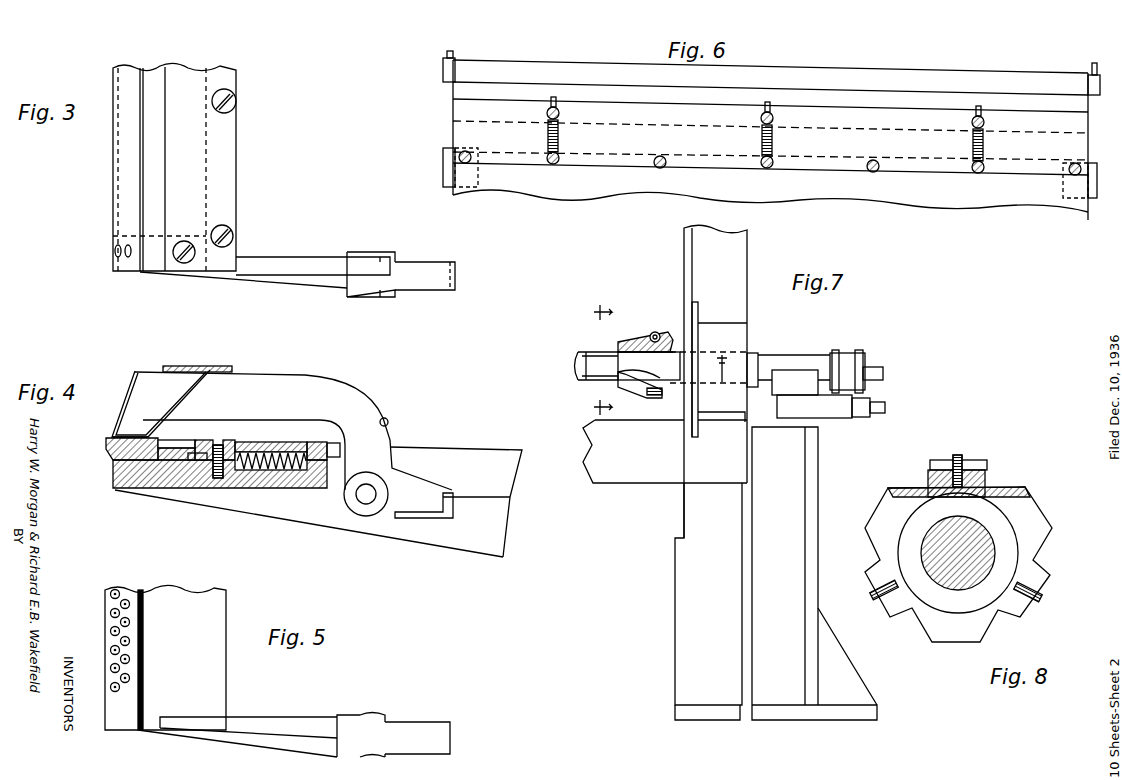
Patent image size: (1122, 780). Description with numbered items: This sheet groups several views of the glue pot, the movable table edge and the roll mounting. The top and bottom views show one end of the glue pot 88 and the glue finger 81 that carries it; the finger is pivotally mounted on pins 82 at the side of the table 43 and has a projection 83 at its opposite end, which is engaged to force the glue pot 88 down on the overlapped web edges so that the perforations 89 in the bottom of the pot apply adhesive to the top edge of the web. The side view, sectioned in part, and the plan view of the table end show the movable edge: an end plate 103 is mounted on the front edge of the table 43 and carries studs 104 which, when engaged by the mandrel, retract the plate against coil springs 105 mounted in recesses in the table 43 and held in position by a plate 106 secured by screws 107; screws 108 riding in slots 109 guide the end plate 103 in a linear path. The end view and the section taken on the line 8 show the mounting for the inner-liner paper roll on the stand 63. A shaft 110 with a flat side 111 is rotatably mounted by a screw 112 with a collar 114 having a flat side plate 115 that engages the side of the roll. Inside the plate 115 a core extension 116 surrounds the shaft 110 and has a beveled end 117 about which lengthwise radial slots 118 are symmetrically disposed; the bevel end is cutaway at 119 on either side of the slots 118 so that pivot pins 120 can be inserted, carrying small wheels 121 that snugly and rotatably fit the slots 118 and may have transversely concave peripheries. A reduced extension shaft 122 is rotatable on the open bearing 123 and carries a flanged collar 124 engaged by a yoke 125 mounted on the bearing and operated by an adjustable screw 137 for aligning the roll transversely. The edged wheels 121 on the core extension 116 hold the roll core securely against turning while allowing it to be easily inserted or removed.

In FIG. 7, the section line 8— 8 is at (609, 360).
In FIG. 4, the table 43 is at (466, 453).
In FIG. 6, the table 43 is at (1080, 216).
In FIG. 7, the stand 63 is at (800, 470).
In FIG. 3, the glue finger 81 is at (298, 264).
In FIG. 4, the glue finger 81 is at (290, 378).
In FIG. 5, the glue finger 81 is at (297, 720).
In FIG. 3, the pins 82 is at (381, 291).
In FIG. 4, the pins 82 is at (368, 500).
In FIG. 5, the pins 82 is at (362, 714).
In FIG. 3, the projection 83 is at (440, 284).
In FIG. 4, the projection 83 is at (440, 512).
In FIG. 5, the projection 83 is at (420, 730).
In FIG. 3, the glue pot 88 is at (230, 138).
In FIG. 4, the glue pot 88 is at (128, 386).
In FIG. 5, the glue pot 88 is at (170, 598).
In FIG. 4, the perforations 89 is at (121, 436).
In FIG. 5, the perforations 89 is at (112, 612).
In FIG. 4, the end plate 103 is at (112, 448).
In FIG. 6, the end plate 103 is at (910, 76).
In FIG. 6, the studs 104 is at (453, 52).
In FIG. 4, the coil springs 105 is at (270, 448).
In FIG. 6, the coil springs 105 is at (560, 138).
In FIG. 4, the plate 106 is at (310, 446).
In FIG. 6, the plate 106 is at (938, 172).
In FIG. 6, the screws 107 is at (778, 184).
In FIG. 4, the screws 108 is at (218, 444).
In FIG. 6, the screws 108 is at (546, 112).
In FIG. 4, the slots 109 is at (198, 466).
In FIG. 6, the slots 109 is at (556, 97).
In FIG. 7, the shaft 110 is at (604, 352).
In FIG. 7, the flat side 111 is at (590, 356).
In FIG. 7, the screw 112 is at (728, 360).
In FIG. 7, the collar 114 is at (722, 330).
In FIG. 7, the side plate 115 is at (695, 270).
In FIG. 7, the core extension 116 is at (655, 396).
In FIG. 8, the core extension 116 is at (1046, 582).
In FIG. 7, the beveled end 117 is at (626, 394).
In FIG. 8, the beveled end 117 is at (1040, 516).
In FIG. 7, the radial slots 118 is at (636, 340).
In FIG. 8, the radial slots 118 is at (985, 478).
In FIG. 8, the cutaway 119 is at (1018, 487).
In FIG. 8, the pivot pins 120 is at (975, 462).
In FIG. 7, the wheels 121 is at (658, 332).
In FIG. 8, the wheels 121 is at (958, 455).
In FIG. 7, the reduced extension shaft 122 is at (780, 358).
In FIG. 7, the open bearing 123 is at (812, 394).
In FIG. 7, the flanged collar 124 is at (846, 355).
In FIG. 7, the yoke 125 is at (878, 384).
In FIG. 7, the adjustable screw 137 is at (880, 414).